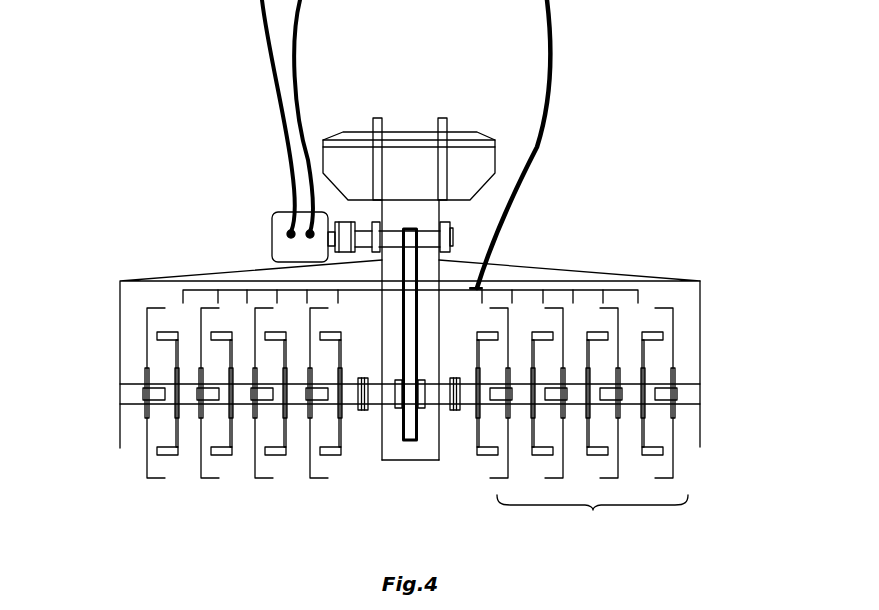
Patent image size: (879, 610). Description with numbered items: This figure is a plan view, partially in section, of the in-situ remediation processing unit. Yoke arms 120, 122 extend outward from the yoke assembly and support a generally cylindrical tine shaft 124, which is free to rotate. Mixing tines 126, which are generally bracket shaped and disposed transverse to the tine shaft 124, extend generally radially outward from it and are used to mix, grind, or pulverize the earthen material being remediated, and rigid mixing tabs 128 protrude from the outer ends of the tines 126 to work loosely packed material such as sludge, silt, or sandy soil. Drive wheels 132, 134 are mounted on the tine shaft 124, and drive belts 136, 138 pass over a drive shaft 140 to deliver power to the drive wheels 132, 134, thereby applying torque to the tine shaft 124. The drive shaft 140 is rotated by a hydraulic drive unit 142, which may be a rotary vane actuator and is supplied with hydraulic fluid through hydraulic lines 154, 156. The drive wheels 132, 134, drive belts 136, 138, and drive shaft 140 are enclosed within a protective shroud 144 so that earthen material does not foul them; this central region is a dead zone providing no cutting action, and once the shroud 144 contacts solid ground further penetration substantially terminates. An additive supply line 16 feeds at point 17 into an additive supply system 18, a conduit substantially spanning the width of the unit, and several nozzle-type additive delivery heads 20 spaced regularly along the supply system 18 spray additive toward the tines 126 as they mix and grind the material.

The additive supply line 16 is at (540, 150).
The point 17 is at (478, 287).
The additive supply system 18 is at (563, 290).
The additive delivery heads 20 is at (617, 297).
The yoke arm 120 is at (118, 433).
The yoke arm 122 is at (700, 347).
The tine shaft 124 is at (695, 392).
The mixing tines 126 is at (582, 422).
The mixing tabs 128 is at (160, 480).
The drive wheel 132 is at (400, 430).
The drive wheel 134 is at (420, 430).
The drive belt 136 is at (438, 272).
The drive belt 138 is at (417, 273).
The drive shaft 140 is at (438, 224).
The hydraulic drive unit 142 is at (272, 236).
The protective shroud 144 is at (420, 460).
The hydraulic line 154 is at (277, 98).
The hydraulic line 156 is at (297, 105).